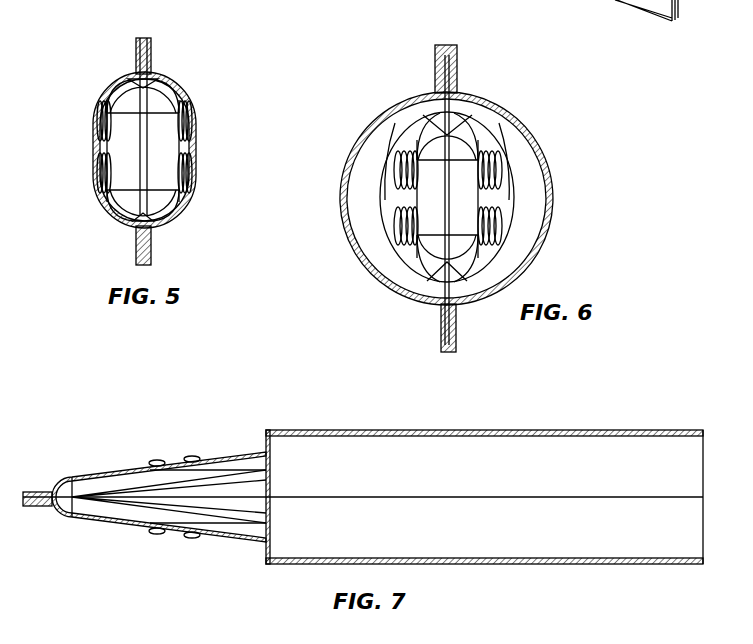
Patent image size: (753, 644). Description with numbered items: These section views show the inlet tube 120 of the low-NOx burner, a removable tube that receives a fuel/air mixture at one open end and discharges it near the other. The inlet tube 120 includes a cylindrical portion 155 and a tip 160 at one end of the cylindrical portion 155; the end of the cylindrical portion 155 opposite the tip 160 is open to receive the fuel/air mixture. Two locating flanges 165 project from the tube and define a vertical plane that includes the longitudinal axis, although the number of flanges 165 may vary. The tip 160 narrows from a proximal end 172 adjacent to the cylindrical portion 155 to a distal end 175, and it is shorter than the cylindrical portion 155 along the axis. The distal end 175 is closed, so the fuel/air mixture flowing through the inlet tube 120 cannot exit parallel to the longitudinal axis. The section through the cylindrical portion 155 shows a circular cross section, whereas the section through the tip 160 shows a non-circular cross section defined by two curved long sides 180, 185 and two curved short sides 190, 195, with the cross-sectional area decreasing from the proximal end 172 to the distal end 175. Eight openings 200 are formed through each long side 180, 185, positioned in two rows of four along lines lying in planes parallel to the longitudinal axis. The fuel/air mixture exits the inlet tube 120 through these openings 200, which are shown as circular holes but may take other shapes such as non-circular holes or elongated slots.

In FIG. 7, the inlet tube 120 is at (684, 400).
In FIG. 6, the cylindrical portion 155 is at (560, 180).
In FIG. 7, the cylindrical portion 155 is at (562, 430).
In FIG. 5, the tip 160 is at (200, 150).
In FIG. 6, the tip 160 is at (497, 198).
In FIG. 7, the tip 160 is at (237, 545).
In FIG. 5, the locating flanges 165 is at (152, 50).
In FIG. 6, the locating flanges 165 is at (457, 70).
In FIG. 6, the proximal end 172 is at (487, 124).
In FIG. 7, the proximal end 172 is at (266, 452).
In FIG. 5, the distal end 175 is at (140, 128).
In FIG. 6, the distal end 175 is at (435, 165).
In FIG. 7, the distal end 175 is at (58, 493).
In FIG. 5, the long side 180 is at (197, 163).
In FIG. 5, the long side 185 is at (97, 153).
In FIG. 5, the short side 190 is at (155, 76).
In FIG. 5, the short side 195 is at (160, 228).
In FIG. 5, the openings 200 is at (102, 117).
In FIG. 6, the openings 200 is at (448, 198).
In FIG. 7, the openings 200 is at (192, 459).